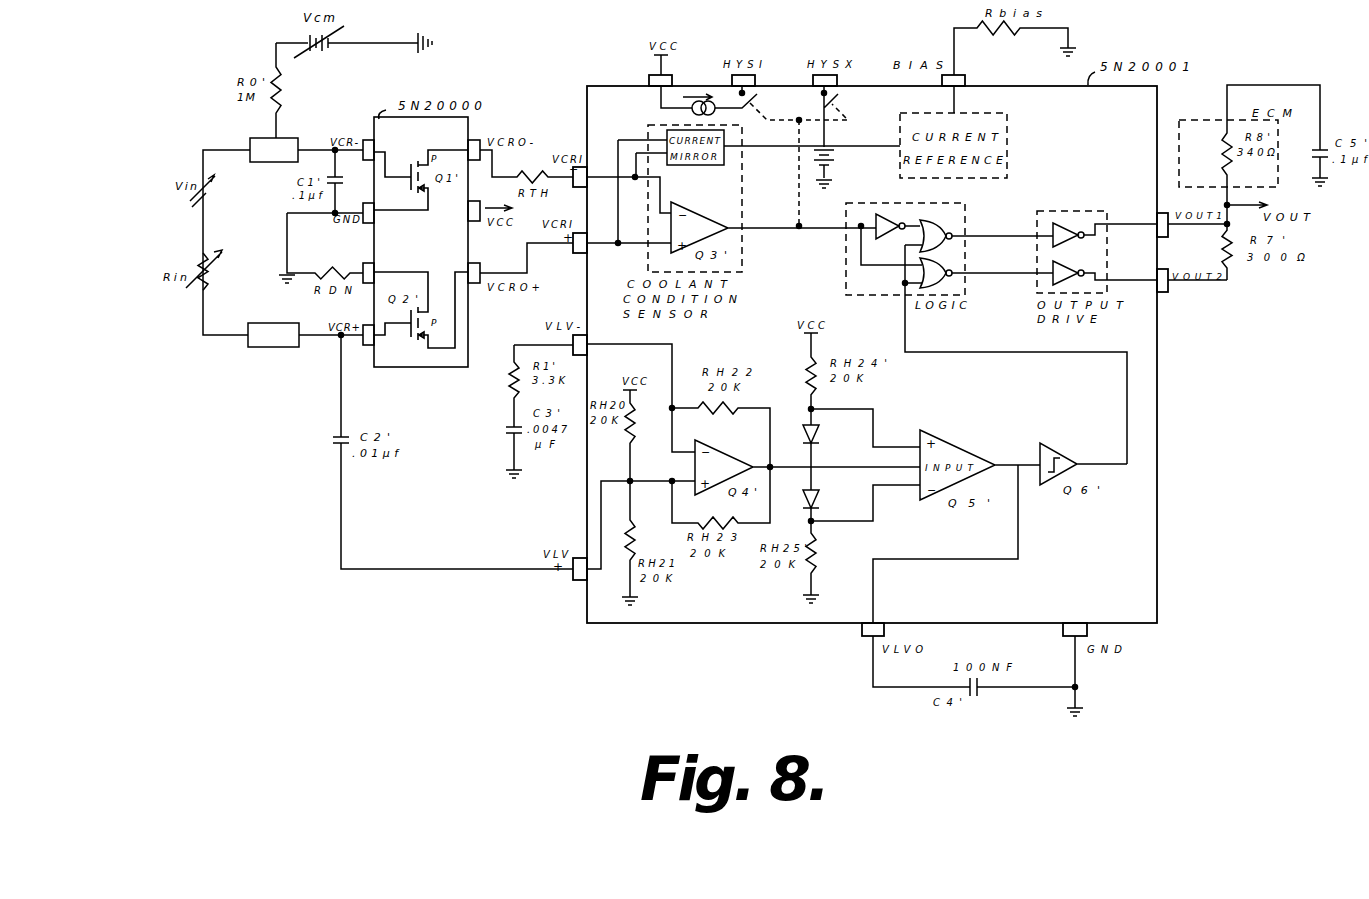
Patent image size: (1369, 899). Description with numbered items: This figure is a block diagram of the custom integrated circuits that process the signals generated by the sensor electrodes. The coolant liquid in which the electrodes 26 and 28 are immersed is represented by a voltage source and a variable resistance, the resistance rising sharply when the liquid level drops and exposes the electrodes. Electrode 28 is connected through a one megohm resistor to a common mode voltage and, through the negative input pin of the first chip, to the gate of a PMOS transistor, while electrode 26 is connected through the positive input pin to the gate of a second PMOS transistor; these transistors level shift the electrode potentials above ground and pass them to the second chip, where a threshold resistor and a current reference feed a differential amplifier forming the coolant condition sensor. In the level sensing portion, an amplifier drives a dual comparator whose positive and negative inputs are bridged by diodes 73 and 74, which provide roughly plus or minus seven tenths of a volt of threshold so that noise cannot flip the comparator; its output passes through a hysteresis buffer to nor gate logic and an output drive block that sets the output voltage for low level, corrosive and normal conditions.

The electrode 28 is at (257, 138).
The electrode 26 is at (248, 348).
The diode 73 is at (832, 434).
The diode 74 is at (832, 499).